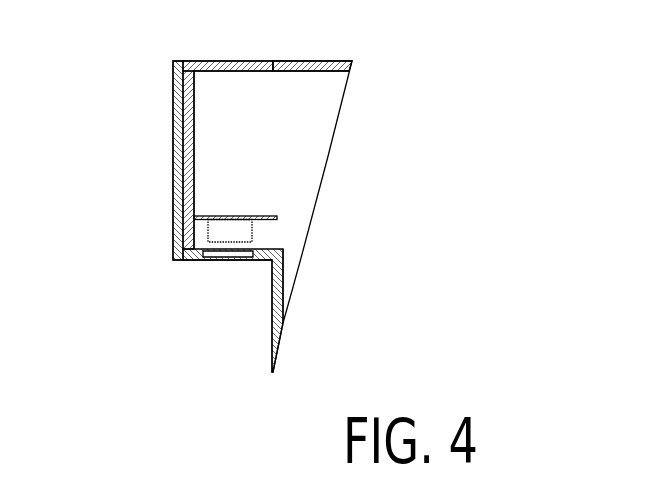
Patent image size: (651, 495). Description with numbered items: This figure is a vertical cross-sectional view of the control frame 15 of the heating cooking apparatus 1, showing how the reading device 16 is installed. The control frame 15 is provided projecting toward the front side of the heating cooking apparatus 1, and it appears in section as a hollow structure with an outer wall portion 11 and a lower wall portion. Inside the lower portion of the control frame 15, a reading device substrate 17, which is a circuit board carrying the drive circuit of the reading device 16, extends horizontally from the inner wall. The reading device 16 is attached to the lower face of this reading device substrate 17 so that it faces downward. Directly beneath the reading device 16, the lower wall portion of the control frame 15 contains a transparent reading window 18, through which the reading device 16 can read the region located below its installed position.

The heating cooking apparatus 1 is at (90, 47).
The outer wall layer 11 is at (175, 72).
The control frame 15 is at (195, 106).
The reading device 16 is at (207, 231).
The reading device substrate 17 is at (265, 216).
The transparent reading window 18 is at (220, 255).